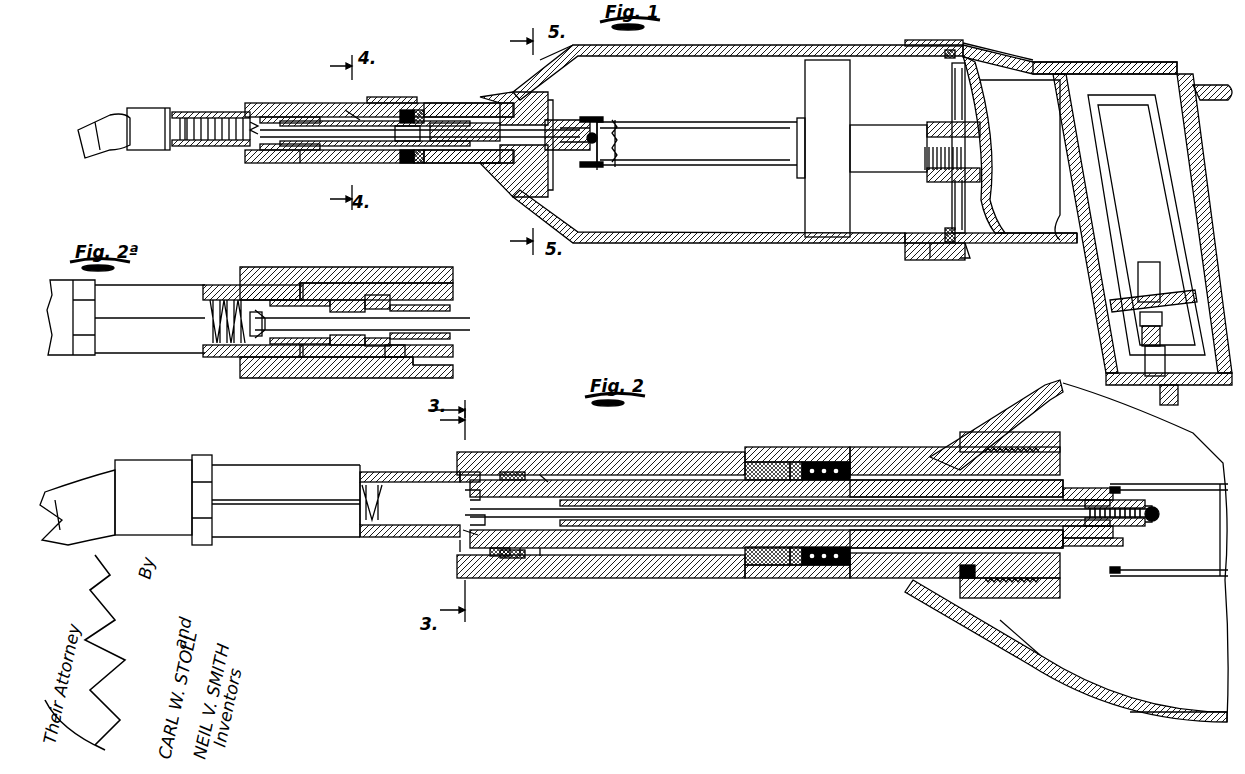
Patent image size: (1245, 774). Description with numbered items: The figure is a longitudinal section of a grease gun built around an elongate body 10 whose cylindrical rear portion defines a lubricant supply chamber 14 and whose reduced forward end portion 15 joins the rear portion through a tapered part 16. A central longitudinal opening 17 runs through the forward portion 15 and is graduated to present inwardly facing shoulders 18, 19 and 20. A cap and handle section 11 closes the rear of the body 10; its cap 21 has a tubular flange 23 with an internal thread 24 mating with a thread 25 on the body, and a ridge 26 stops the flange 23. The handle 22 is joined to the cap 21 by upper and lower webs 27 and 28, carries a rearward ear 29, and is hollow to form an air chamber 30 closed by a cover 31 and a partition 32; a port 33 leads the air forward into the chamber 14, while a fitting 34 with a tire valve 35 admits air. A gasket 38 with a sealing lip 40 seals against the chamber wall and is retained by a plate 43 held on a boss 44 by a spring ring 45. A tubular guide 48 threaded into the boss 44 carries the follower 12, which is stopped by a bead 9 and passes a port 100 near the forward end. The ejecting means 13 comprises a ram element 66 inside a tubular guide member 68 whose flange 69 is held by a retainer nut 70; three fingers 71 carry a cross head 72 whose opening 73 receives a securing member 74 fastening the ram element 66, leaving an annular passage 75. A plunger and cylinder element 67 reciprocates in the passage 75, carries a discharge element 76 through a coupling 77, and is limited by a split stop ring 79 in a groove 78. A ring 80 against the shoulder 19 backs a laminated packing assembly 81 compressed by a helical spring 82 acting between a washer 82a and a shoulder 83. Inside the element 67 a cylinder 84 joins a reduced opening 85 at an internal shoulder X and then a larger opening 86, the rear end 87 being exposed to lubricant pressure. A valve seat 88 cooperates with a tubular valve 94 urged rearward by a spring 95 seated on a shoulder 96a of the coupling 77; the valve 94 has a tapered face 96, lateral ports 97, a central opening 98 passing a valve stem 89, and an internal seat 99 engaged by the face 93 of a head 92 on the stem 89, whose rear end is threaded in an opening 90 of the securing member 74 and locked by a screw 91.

In FIG. 1, the out-turned bead 9 is at (585, 120).
In FIG. 2, the out-turned bead 9 is at (1116, 575).
In FIG. 1, the container or body 10 is at (724, 251).
In FIG. 2, the container or body 10 is at (1160, 726).
In FIG. 1, the cap and handle section 11 is at (1025, 252).
In FIG. 1, the follower 12 is at (835, 65).
In FIG. 1, the ejecting means 13 is at (462, 163).
In FIG. 2, the ejecting means 13 is at (888, 468).
In FIG. 1, the lubricant supply chamber 14 is at (697, 163).
In FIG. 2, the lubricant supply chamber 14 is at (1195, 712).
In FIG. 1, the forward end portion 15 is at (396, 145).
In FIG. 1, the tapered part 16 is at (555, 62).
In FIG. 2, the tapered part 16 is at (1038, 660).
In FIG. 1, the central longitudinal opening 17 is at (385, 110).
In FIG. 2A, the central longitudinal opening 17 is at (455, 292).
In FIG. 2, the central longitudinal opening 17 is at (675, 475).
In FIG. 1, the shoulder 18 is at (508, 170).
In FIG. 2, the shoulder 18 is at (965, 445).
In FIG. 2, the shoulder 19 is at (752, 465).
In FIG. 1, the shoulder 20 is at (270, 163).
In FIG. 2A, the shoulder 20 is at (283, 378).
In FIG. 2, the shoulder 20 is at (510, 468).
In FIG. 1, the cap 21 is at (988, 203).
In FIG. 1, the handle 22 is at (1192, 215).
In FIG. 1, the tubular flange 23 is at (930, 260).
In FIG. 1, the internal thread 24 is at (942, 260).
In FIG. 1, the thread 25 is at (925, 245).
In FIG. 1, the bead or ridge 26 is at (912, 42).
In FIG. 1, the upper web 27 is at (1010, 68).
In FIG. 1, the lower web 28 is at (1048, 232).
In FIG. 1, the ear 29 is at (1210, 88).
In FIG. 1, the chamber 30 is at (1175, 182).
In FIG. 1, the cover 31 is at (1118, 63).
In FIG. 1, the web or partition 32 is at (1110, 308).
In FIG. 1, the port 33 is at (1010, 88).
In FIG. 1, the fitting 34 is at (1145, 332).
In FIG. 1, the tire valve 35 is at (1160, 394).
In FIG. 1, the annular gasket 38 is at (965, 256).
In FIG. 1, the sealing lip 40 is at (948, 58).
In FIG. 1, the plate 43 is at (952, 202).
In FIG. 1, the boss 44 is at (950, 180).
In FIG. 1, the spring ring 45 is at (952, 120).
In FIG. 1, the guide 48 is at (695, 144).
In FIG. 2, the guide 48 is at (1180, 572).
In FIG. 1, the ram element 66 is at (478, 118).
In FIG. 2, the ram element 66 is at (910, 548).
In FIG. 1, the plunger and cylinder element 67 is at (452, 118).
In FIG. 2A, the plunger and cylinder element 67 is at (150, 345).
In FIG. 2, the plunger and cylinder element 67 is at (648, 540).
In FIG. 1, the tubular guide member 68 is at (490, 165).
In FIG. 2, the tubular guide member 68 is at (940, 580).
In FIG. 2, the annular external flange 69 is at (962, 590).
In FIG. 2, the retainer nut 70 is at (1060, 592).
In FIG. 1, the fingers 71 is at (558, 120).
In FIG. 2, the fingers 71 is at (1070, 488).
In FIG. 2, the cross head 72 is at (1090, 500).
In FIG. 2, the longitudinal opening 73 is at (1095, 548).
In FIG. 2, the securing member 74 is at (1120, 506).
In FIG. 2, the annular space or passage 75 is at (868, 560).
In FIG. 1, the discharge element 76 is at (88, 130).
In FIG. 2, the discharge element 76 is at (85, 490).
In FIG. 1, the coupling 77 is at (148, 129).
In FIG. 2A, the coupling 77 is at (68, 340).
In FIG. 2, the coupling 77 is at (165, 480).
In FIG. 2A, the annular groove 78 is at (390, 360).
In FIG. 2, the annular groove 78 is at (522, 558).
In FIG. 1, the split stop ring 79 is at (310, 163).
In FIG. 2A, the split stop ring 79 is at (430, 365).
In FIG. 2, the ring 80 is at (760, 570).
In FIG. 1, the laminated packing assembly 81 is at (412, 110).
In FIG. 2, the laminated packing assembly 81 is at (790, 570).
In FIG. 1, the helical spring 82 is at (420, 163).
In FIG. 2, the helical spring 82 is at (815, 568).
In FIG. 2, the washer 82a is at (792, 462).
In FIG. 2, the shoulder 83 is at (852, 462).
In FIG. 1, the cylinder 84 is at (365, 147).
In FIG. 2A, the cylinder 84 is at (438, 300).
In FIG. 2, the cylinder 84 is at (690, 528).
In FIG. 2A, the reduced opening 85 is at (405, 300).
In FIG. 2, the reduced opening 85 is at (547, 560).
In FIG. 2A, the larger opening 86 is at (222, 357).
In FIG. 2, the larger opening 86 is at (372, 537).
In FIG. 2, the rear end 87 is at (822, 462).
In FIG. 2, the annular valve seat 88 is at (490, 455).
In FIG. 1, the valve stem 89 is at (385, 140).
In FIG. 2A, the valve stem 89 is at (455, 330).
In FIG. 2, the valve stem 89 is at (605, 500).
In FIG. 2, the longitudinal opening 90 is at (1150, 510).
In FIG. 2, the screw 91 is at (1158, 516).
In FIG. 1, the head 92 is at (240, 150).
In FIG. 2, the head 92 is at (468, 495).
In FIG. 2A, the valve face 93 is at (255, 340).
In FIG. 2, the valve face 93 is at (468, 518).
In FIG. 1, the tubular valve 94 is at (285, 117).
In FIG. 2A, the tubular valve 94 is at (295, 285).
In FIG. 2, the tubular valve 94 is at (408, 472).
In FIG. 1, the helical spring 95 is at (230, 118).
In FIG. 2, the helical spring 95 is at (368, 480).
In FIG. 2A, the tapered valve face 96 is at (365, 300).
In FIG. 2, the tapered valve face 96 is at (497, 560).
In FIG. 1, the shoulder 96a is at (192, 150).
In FIG. 2, the lateral ports 97 is at (468, 540).
In FIG. 2, the central longitudinal opening 98 is at (460, 560).
In FIG. 2A, the tapered face or seat 99 is at (330, 300).
In FIG. 2, the tapered face or seat 99 is at (458, 478).
In FIG. 1, the port 100 is at (633, 165).
In FIG. 2, the port 100 is at (1222, 578).
In FIG. 1, the internal shoulder x is at (353, 100).
In FIG. 2, the internal shoulder x is at (545, 470).